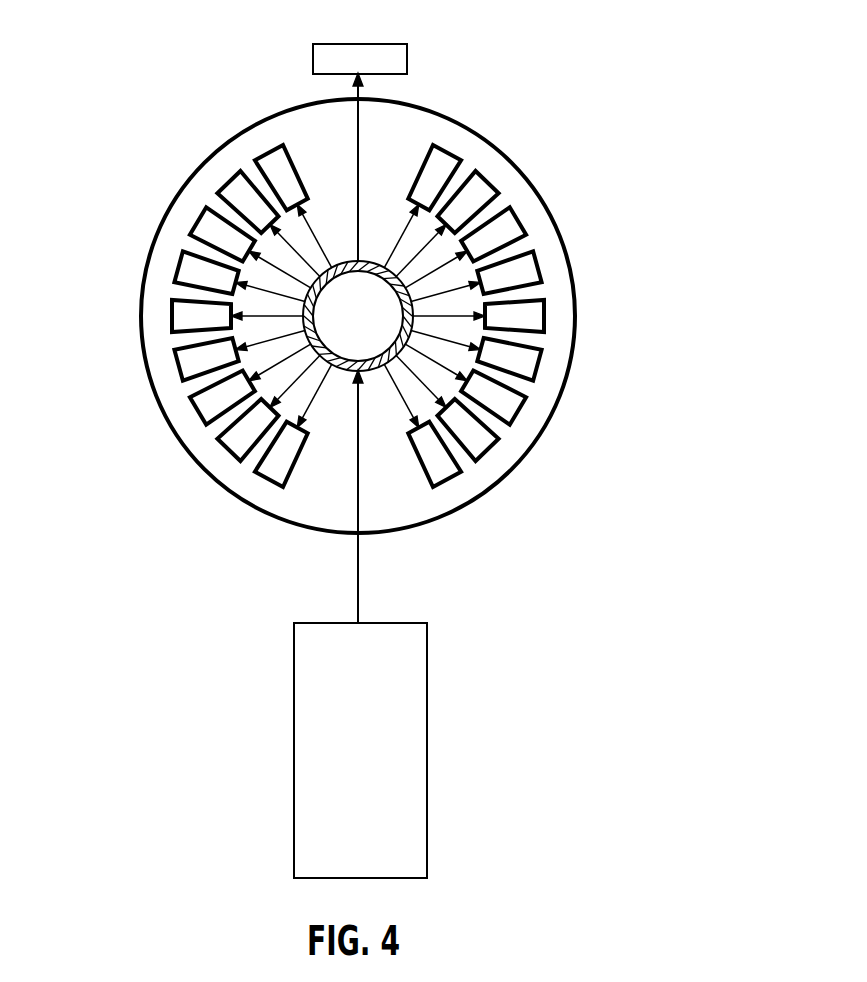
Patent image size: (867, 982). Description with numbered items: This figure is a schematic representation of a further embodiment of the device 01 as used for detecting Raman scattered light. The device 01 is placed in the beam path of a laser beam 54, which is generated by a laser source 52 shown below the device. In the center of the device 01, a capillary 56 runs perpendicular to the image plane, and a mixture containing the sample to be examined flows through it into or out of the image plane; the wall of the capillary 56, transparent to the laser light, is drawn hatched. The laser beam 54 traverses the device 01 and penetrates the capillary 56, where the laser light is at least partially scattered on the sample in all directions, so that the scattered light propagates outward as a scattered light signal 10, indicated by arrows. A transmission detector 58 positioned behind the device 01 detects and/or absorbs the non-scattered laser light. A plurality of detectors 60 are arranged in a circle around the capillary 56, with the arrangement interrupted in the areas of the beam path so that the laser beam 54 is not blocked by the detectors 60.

The device 01 is at (170, 398).
The scattered light signal 10 is at (313, 355).
The detectors 60 is at (266, 156).
The capillary 56 is at (381, 367).
The laser beam 54 is at (359, 143).
The transmission detector 58 is at (407, 57).
The laser source 52 is at (427, 697).